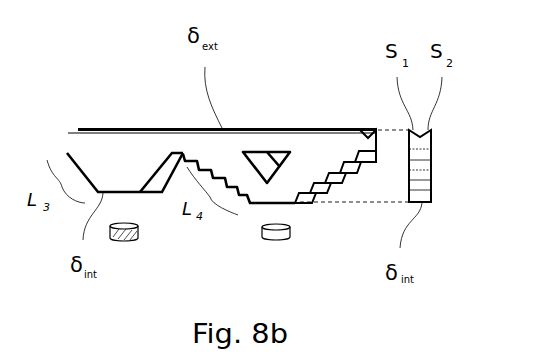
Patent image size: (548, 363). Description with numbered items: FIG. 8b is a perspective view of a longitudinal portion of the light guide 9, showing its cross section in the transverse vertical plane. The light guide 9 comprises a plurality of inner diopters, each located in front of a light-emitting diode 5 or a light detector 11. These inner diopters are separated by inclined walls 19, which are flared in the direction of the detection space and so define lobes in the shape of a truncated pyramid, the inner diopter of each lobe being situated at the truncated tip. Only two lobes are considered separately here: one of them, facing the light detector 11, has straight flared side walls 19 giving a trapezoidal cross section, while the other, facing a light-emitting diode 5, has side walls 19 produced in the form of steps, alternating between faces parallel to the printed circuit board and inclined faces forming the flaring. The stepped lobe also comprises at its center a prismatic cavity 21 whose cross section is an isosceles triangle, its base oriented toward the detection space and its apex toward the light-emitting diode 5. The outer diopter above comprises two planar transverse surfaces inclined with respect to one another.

The light guide 9 is at (221, 166).
The prismatic cavity 21 is at (277, 152).
The light detector 11 is at (123, 240).
The light-emitting diode 5 is at (275, 238).
The inclined wall 19 is at (366, 153).